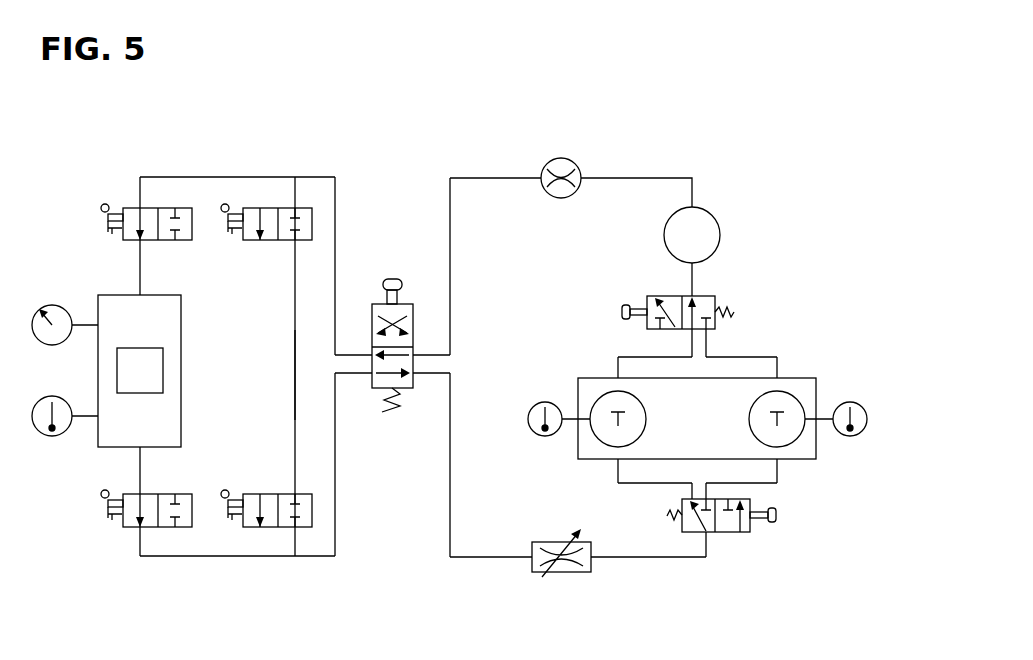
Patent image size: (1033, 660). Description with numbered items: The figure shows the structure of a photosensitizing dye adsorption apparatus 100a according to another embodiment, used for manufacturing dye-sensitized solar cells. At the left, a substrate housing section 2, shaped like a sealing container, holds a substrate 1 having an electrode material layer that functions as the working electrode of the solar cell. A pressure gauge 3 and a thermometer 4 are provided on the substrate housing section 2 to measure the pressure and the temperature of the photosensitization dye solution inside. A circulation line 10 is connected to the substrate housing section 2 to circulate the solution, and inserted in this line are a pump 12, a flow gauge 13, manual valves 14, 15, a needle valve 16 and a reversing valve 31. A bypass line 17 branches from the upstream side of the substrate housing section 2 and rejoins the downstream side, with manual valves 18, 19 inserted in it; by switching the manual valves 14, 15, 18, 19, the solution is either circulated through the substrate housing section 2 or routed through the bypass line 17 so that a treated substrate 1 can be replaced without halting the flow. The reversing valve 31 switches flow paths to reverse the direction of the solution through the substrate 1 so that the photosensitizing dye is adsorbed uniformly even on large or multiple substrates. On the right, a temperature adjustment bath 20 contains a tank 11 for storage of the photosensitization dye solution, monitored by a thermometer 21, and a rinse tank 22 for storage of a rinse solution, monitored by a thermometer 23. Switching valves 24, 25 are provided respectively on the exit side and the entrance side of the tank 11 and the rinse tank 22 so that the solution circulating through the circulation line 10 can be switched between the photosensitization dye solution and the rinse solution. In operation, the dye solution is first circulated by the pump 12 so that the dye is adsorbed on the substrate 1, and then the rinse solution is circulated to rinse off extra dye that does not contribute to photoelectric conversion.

The substrate 1 is at (163, 370).
The substrate housing section 2 is at (118, 294).
The pressure gauge 3 is at (52, 305).
The thermometer 4 is at (52, 396).
The circulation line 10 is at (490, 175).
The tank 11 is at (592, 403).
The pump 12 is at (705, 213).
The flow gauge 13 is at (562, 158).
The manual valve 14 is at (132, 207).
The manual valve 15 is at (133, 530).
The needle valve 16 is at (572, 575).
The bypass line 17 is at (293, 332).
The manual valve 18 is at (252, 242).
The manual valve 19 is at (257, 492).
The temperature adjustment bath 20 is at (792, 462).
The thermometer 21 is at (541, 437).
The rinse tank 22 is at (799, 402).
The thermometer 23 is at (851, 437).
The switching valve 24 is at (707, 296).
The switching valve 25 is at (745, 535).
The reversing valve 31 is at (417, 390).
The photosensitizing dye adsorption apparatus 100a is at (674, 118).